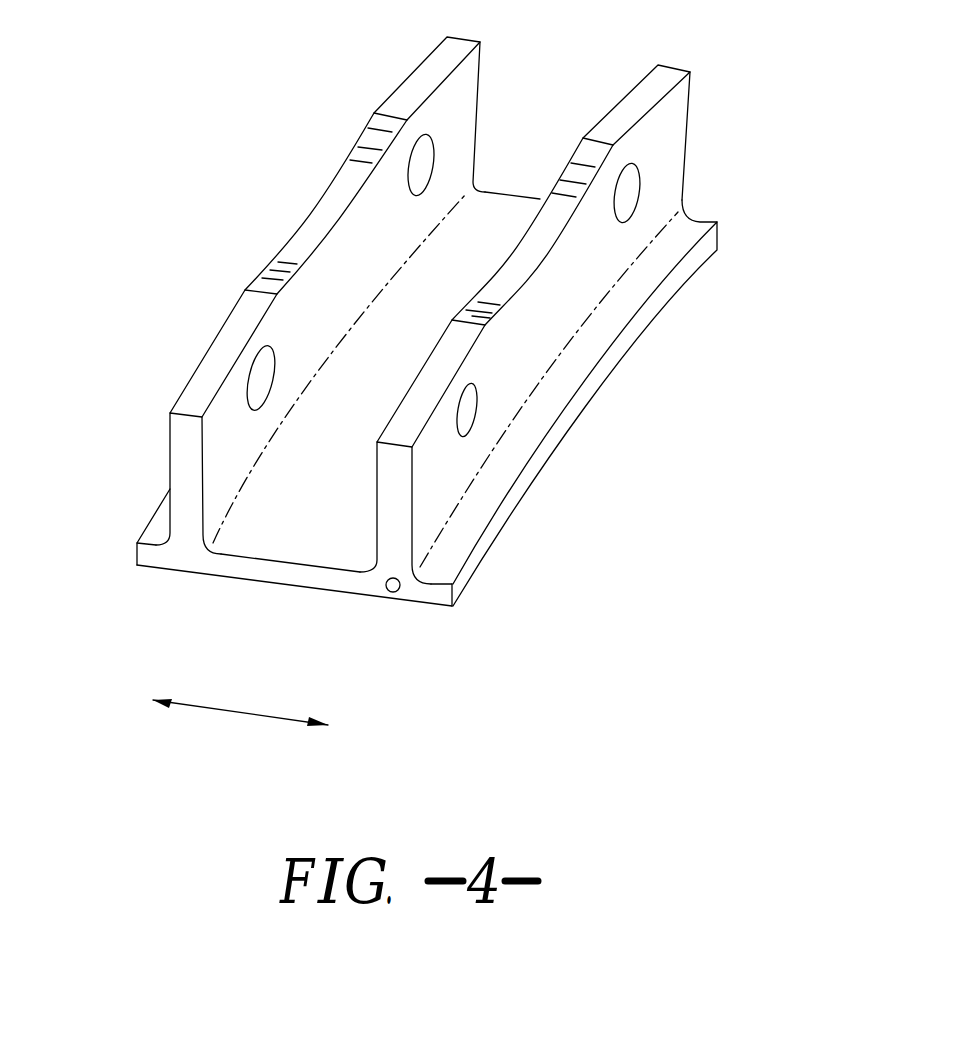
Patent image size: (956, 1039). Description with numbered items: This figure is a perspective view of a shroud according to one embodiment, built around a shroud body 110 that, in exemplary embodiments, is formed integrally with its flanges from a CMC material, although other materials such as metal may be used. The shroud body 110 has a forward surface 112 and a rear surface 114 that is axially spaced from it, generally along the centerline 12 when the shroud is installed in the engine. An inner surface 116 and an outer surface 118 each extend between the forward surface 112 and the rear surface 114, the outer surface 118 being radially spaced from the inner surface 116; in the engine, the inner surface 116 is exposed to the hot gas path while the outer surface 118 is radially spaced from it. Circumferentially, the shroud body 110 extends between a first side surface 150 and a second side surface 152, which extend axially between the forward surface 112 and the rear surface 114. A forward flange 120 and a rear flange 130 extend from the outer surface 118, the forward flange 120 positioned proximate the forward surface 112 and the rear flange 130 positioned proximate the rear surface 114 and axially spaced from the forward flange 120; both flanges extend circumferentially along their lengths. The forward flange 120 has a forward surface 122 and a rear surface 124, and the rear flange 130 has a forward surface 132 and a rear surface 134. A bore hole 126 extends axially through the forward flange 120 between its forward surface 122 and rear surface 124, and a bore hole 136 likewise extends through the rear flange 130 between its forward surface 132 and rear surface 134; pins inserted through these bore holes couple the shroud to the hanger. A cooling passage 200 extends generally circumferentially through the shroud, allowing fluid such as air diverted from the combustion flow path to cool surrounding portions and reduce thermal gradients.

The centerline 12 is at (237, 714).
The shroud body 110 is at (393, 447).
The forward surface 112 is at (148, 546).
The rear surface 114 is at (470, 578).
The inner surface 116 is at (284, 590).
The outer surface 118 is at (483, 268).
The forward flange 120 is at (278, 295).
The forward surface 122 is at (170, 443).
The rear surface 124 is at (237, 430).
The bore hole 126 is at (266, 348).
The rear flange 130 is at (559, 324).
The forward surface 132 is at (380, 473).
The rear surface 134 is at (452, 457).
The bore hole 136 is at (482, 392).
The first side surface 150 is at (432, 600).
The second side surface 152 is at (707, 205).
The cooling passage 200 is at (394, 594).